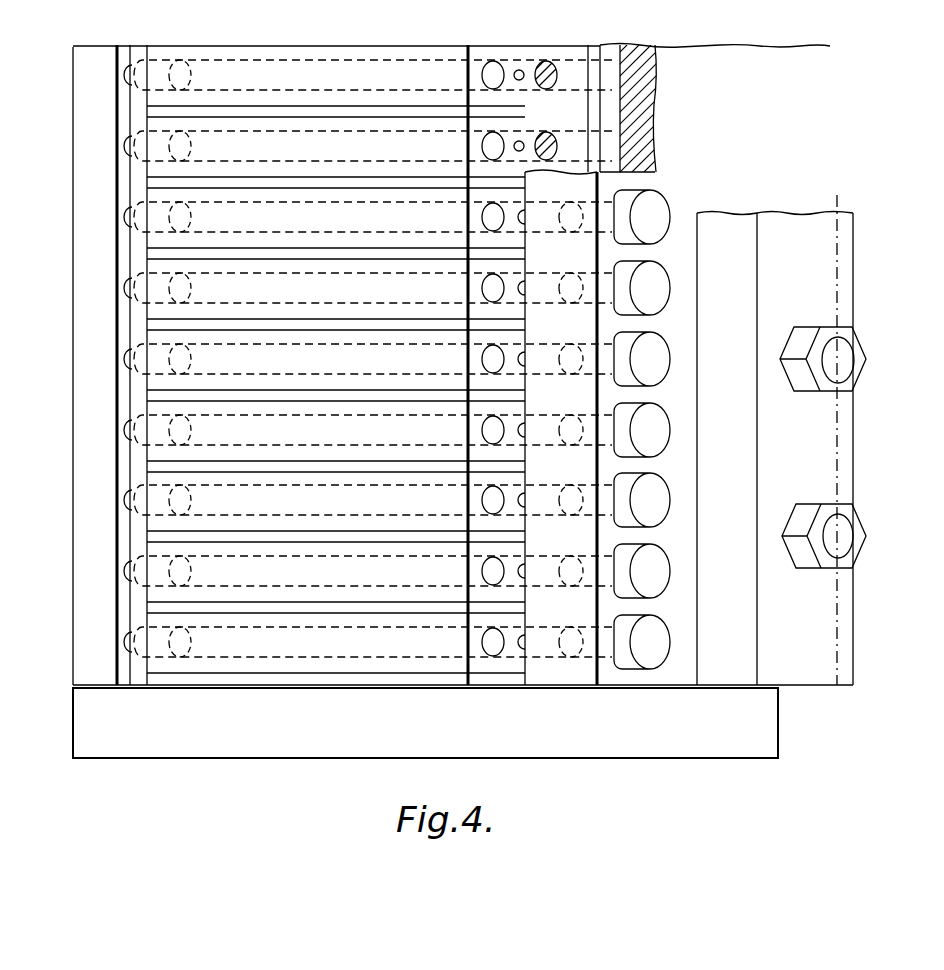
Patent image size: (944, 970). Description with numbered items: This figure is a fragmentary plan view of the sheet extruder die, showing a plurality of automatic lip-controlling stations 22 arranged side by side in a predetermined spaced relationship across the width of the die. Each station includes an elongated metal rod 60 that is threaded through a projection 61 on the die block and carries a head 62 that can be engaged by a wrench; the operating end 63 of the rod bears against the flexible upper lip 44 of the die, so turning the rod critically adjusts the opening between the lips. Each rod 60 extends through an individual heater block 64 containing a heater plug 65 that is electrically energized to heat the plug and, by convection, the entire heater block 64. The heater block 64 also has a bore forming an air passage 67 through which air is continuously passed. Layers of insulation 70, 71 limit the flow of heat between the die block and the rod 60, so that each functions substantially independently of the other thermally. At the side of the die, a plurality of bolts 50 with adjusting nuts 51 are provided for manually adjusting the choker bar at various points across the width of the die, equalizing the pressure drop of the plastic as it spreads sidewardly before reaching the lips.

The automatic controlling stations 22 is at (147, 388).
The upper lip portion 44 is at (88, 550).
The bolts 50 is at (845, 530).
The adjusting nuts 51 is at (805, 503).
The elongated metal rod 60 is at (548, 133).
The projection 61 is at (575, 675).
The head 62 is at (652, 278).
The operating end 63 is at (120, 137).
The heater block 64 is at (150, 340).
The heater plug 65 is at (492, 135).
The air passage 67 is at (518, 142).
The insulation layer 70 is at (140, 462).
The insulation layer 71 is at (153, 255).